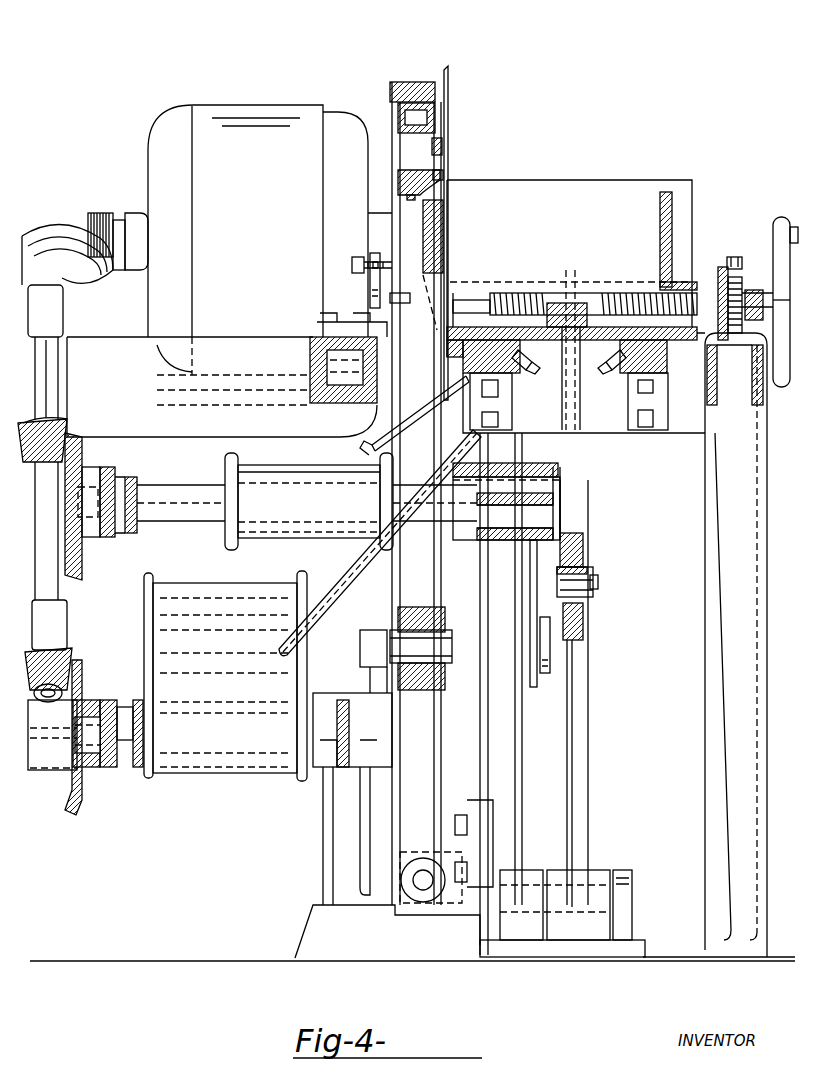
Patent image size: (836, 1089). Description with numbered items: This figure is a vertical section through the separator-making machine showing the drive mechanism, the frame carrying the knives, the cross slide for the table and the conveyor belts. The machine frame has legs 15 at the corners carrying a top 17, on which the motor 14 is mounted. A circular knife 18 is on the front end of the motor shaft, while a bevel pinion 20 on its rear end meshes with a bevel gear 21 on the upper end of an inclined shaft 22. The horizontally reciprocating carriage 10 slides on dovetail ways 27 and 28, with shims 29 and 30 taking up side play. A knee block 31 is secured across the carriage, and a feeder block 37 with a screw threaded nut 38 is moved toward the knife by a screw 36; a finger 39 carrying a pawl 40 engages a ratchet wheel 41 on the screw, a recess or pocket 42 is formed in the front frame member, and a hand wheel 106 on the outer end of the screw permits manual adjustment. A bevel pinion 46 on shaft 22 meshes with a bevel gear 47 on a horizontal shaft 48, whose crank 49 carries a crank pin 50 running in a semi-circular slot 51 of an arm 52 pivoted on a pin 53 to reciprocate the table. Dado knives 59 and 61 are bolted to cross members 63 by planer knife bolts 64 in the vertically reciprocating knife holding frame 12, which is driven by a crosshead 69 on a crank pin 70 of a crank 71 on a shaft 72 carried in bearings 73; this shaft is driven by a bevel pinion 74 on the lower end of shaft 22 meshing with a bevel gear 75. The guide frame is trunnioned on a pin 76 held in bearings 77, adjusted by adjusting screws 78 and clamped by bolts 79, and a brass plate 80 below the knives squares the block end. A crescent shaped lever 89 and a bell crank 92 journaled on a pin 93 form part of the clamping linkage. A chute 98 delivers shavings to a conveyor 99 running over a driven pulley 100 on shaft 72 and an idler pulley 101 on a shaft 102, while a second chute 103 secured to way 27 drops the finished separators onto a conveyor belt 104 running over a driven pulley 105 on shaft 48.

The horizontally reciprocating carriage 10 is at (457, 297).
The vertically reciprocating knife holding frame 12 is at (413, 148).
The motor 14 is at (220, 104).
The legs 15 is at (712, 805).
The top 17 is at (227, 337).
The circular knife 18 is at (445, 70).
The bevel pinion 20 is at (103, 213).
The bevel gear 21 is at (50, 233).
The shaft 22 is at (48, 377).
The way 27 is at (515, 385).
The way 28 is at (662, 430).
The shim 29 is at (521, 358).
The shim 30 is at (618, 360).
The knee block 31 is at (594, 183).
The screw 36 is at (513, 296).
The feeder block 37 is at (661, 230).
The screw threaded nut 38 is at (664, 289).
The finger 39 is at (724, 262).
The pawl 40 is at (735, 257).
The ratchet wheel 41 is at (748, 290).
The recess or pocket 42 is at (706, 462).
The bevel pinion 46 is at (62, 423).
The bevel gear 47 is at (83, 437).
The horizontal shaft 48 is at (160, 503).
The crank 49 is at (550, 470).
The crank pin 50 is at (592, 573).
The semi-circular slot 51 is at (585, 618).
The arm 52 is at (582, 543).
The pin 53 is at (633, 890).
The dado knife 59 is at (443, 177).
The dado knife 61 is at (441, 148).
The cross member 63 is at (427, 128).
The planer knife bolt 64 is at (392, 92).
The crosshead 69 is at (437, 623).
The crank pin 70 is at (444, 673).
The crank 71 is at (377, 773).
The shaft 72 is at (92, 737).
The bearings 73 is at (127, 770).
The bevel pinion 74 is at (40, 773).
The bevel gear 75 is at (72, 813).
The pin 76 is at (395, 880).
The bearings 77 is at (423, 880).
The adjusting screw 78 is at (353, 261).
The bolt 79 is at (369, 297).
The brass plate 80 is at (441, 215).
The crescent shaped lever 89 is at (550, 675).
The bell crank 92 is at (533, 687).
The pin 93 is at (467, 550).
The chute 98 is at (357, 578).
The conveyor 99 is at (217, 773).
The driven pulley 100 is at (147, 777).
The idler pulley 101 is at (147, 597).
The shaft 102 is at (197, 623).
The second chute 103 is at (375, 446).
The conveyor belt 104 is at (260, 465).
The driven pulley 105 is at (238, 547).
The hand wheel 106 is at (780, 219).